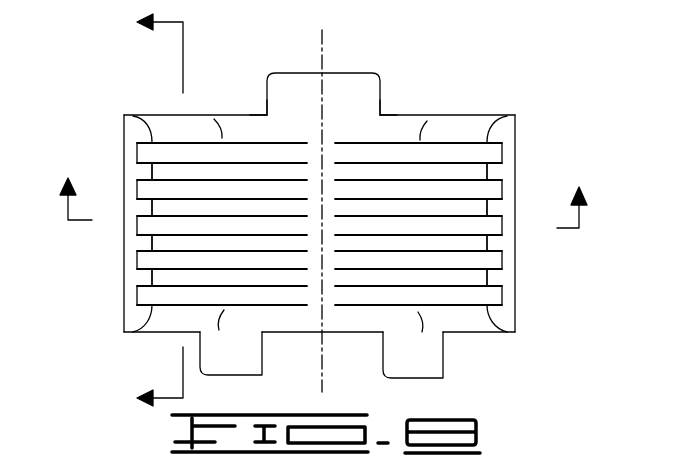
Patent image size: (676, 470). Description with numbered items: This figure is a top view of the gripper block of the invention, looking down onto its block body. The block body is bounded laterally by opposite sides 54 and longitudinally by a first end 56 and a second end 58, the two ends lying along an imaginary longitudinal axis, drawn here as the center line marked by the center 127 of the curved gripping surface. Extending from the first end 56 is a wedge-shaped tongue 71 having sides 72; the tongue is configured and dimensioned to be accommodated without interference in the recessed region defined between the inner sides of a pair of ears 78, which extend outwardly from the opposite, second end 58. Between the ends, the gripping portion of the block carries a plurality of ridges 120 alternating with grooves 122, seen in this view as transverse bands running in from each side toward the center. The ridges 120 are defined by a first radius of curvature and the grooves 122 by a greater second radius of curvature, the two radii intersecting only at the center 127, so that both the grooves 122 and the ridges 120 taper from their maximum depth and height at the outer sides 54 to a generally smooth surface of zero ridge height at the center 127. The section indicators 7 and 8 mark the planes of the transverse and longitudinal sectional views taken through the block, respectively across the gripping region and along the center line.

The section line 7- 7 is at (323, 188).
The section line 8- 8 is at (145, 210).
The opposite sides 54 is at (518, 145).
The first end 56 is at (482, 116).
The second end 58 is at (160, 333).
The wedge-shaped tongue 71 is at (350, 85).
The sides 72 is at (267, 82).
The ears 78 is at (243, 367).
The ridges 120 is at (255, 170).
The grooves 122 is at (252, 190).
The center 127 is at (322, 40).